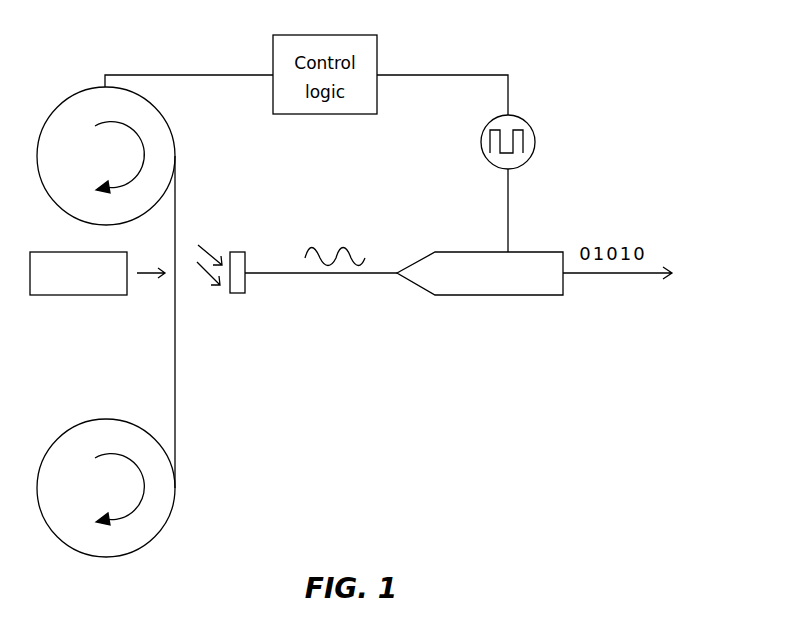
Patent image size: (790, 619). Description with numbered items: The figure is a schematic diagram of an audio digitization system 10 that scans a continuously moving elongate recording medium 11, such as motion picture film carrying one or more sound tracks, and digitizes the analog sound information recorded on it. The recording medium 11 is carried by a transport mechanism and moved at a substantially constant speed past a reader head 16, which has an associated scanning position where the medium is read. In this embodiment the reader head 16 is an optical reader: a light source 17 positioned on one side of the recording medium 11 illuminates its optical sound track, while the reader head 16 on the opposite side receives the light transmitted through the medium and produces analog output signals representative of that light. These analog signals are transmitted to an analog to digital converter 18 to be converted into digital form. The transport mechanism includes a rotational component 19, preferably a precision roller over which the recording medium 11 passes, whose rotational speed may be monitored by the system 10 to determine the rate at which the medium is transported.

The digitization system 10 is at (588, 98).
The recording medium 11 is at (148, 545).
The reader head 16 is at (238, 295).
The light source 17 is at (93, 285).
The analog to digital converter 18 is at (563, 252).
The rotational component 19 is at (84, 88).